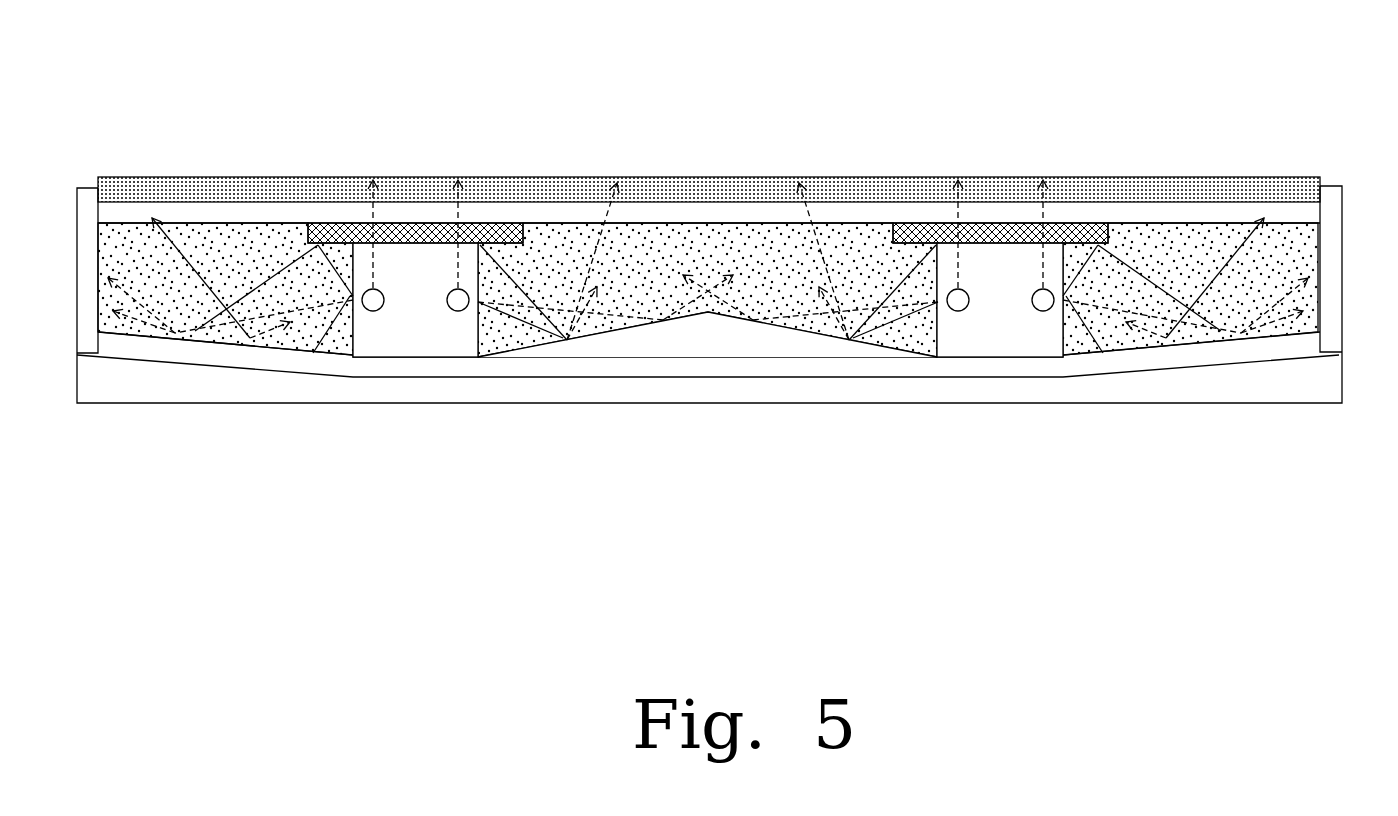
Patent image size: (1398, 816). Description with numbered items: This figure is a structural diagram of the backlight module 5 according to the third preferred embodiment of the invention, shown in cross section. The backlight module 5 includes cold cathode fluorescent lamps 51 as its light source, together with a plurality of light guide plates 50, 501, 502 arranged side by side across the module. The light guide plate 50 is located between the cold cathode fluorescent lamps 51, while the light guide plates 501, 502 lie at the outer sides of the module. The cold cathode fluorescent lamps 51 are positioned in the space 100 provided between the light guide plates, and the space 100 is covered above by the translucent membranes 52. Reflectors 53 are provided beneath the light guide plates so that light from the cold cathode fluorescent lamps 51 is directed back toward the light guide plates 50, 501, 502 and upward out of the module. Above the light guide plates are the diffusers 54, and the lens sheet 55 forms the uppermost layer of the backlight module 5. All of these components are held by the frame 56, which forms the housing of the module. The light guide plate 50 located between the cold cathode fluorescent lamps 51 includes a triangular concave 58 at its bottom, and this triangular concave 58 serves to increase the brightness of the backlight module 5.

The backlight module 5 is at (233, 42).
The light guide plate 50 is at (702, 248).
The light guide plate 501 is at (123, 243).
The light guide plate 502 is at (1286, 238).
The cold cathode fluorescent lamp 51 is at (373, 311).
The translucent membrane 52 is at (1019, 237).
The reflector 53 is at (1222, 352).
The diffuser 54 is at (1193, 212).
The lens sheet 55 is at (1305, 188).
The frame 56 is at (718, 387).
The triangular concave 58 is at (630, 342).
The space 100 is at (408, 257).